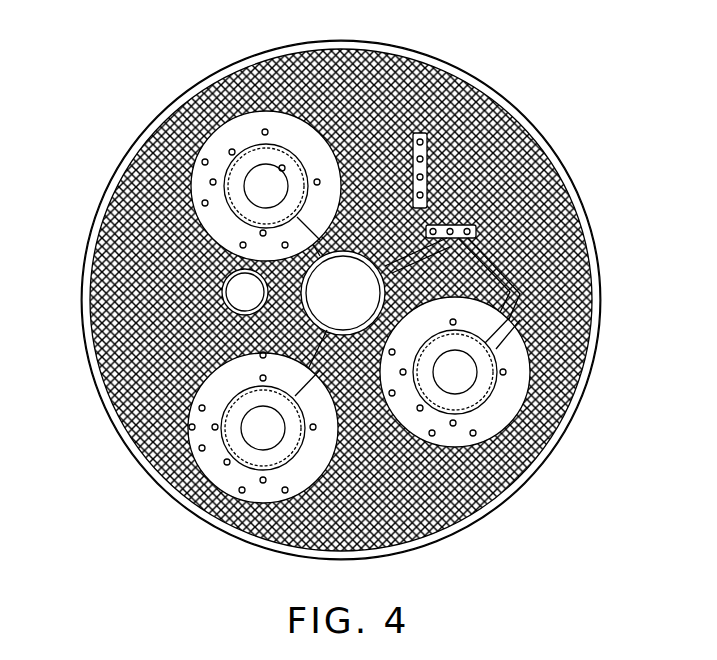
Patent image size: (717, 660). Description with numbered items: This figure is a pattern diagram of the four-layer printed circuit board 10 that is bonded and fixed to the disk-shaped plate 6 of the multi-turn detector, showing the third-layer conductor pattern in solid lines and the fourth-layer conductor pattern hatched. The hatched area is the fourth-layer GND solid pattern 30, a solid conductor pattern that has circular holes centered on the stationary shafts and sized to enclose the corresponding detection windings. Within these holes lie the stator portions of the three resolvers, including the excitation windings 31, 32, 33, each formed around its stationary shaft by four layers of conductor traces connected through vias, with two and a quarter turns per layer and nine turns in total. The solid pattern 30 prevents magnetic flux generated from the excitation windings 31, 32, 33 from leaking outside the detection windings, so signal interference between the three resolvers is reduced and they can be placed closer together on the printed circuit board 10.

The plate 6 is at (585, 202).
The four-layer printed circuit board 10 is at (560, 153).
The fourth-layer GND solid pattern 30 is at (440, 77).
The excitation winding 31 is at (223, 402).
The excitation winding 32 is at (530, 338).
The excitation winding 33 is at (245, 150).